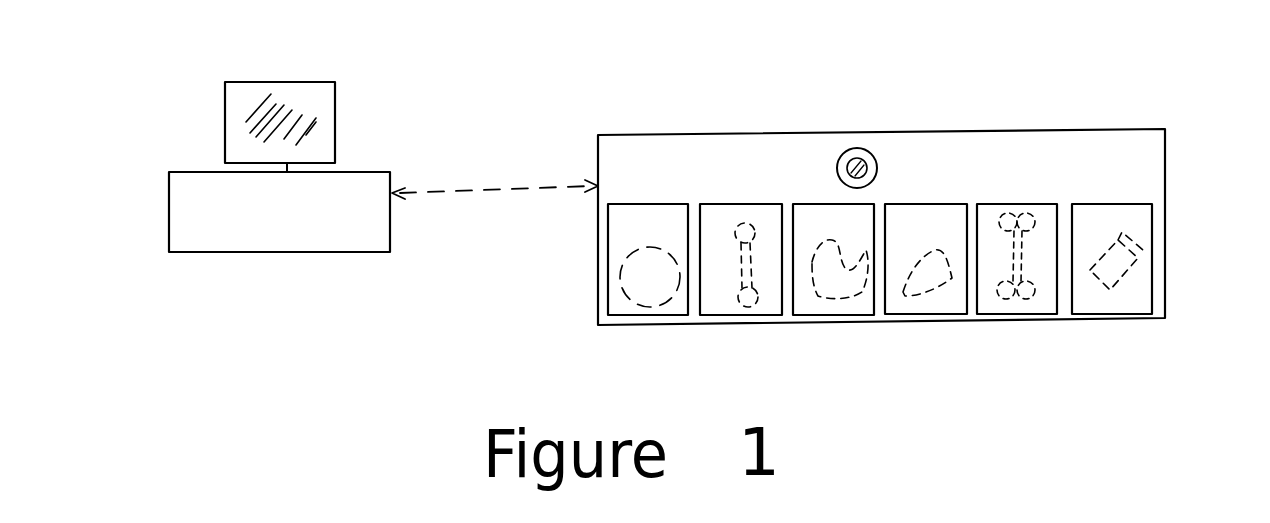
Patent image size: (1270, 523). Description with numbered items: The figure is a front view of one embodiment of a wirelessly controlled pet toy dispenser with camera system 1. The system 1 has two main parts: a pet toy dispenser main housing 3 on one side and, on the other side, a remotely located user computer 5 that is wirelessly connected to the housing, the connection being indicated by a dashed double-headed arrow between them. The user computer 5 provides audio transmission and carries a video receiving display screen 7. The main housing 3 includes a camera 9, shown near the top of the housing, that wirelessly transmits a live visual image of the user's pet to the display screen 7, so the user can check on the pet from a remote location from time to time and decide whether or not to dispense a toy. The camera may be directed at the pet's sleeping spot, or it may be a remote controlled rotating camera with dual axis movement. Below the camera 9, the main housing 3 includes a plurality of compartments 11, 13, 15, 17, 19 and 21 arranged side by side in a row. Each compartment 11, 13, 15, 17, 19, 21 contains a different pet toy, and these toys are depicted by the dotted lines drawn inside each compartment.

The wirelessly controlled pet toy dispenser with camera system 1 is at (1093, 103).
The main housing 3 is at (1138, 130).
The user computer 5 is at (352, 173).
The display screen 7 is at (333, 113).
The camera 9 is at (862, 155).
The compartment 11 is at (657, 297).
The compartment 13 is at (757, 297).
The compartment 15 is at (850, 293).
The compartment 17 is at (948, 293).
The compartment 19 is at (1033, 300).
The compartment 21 is at (1132, 293).